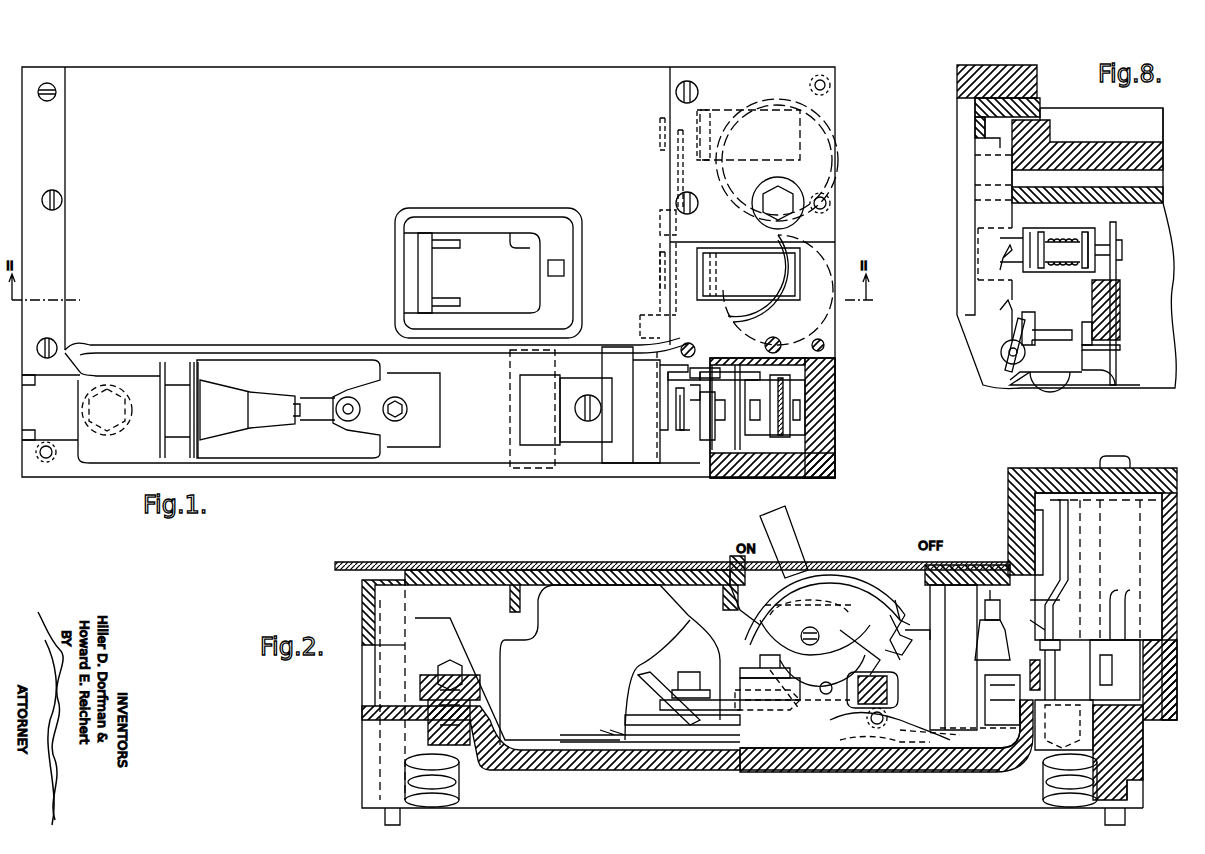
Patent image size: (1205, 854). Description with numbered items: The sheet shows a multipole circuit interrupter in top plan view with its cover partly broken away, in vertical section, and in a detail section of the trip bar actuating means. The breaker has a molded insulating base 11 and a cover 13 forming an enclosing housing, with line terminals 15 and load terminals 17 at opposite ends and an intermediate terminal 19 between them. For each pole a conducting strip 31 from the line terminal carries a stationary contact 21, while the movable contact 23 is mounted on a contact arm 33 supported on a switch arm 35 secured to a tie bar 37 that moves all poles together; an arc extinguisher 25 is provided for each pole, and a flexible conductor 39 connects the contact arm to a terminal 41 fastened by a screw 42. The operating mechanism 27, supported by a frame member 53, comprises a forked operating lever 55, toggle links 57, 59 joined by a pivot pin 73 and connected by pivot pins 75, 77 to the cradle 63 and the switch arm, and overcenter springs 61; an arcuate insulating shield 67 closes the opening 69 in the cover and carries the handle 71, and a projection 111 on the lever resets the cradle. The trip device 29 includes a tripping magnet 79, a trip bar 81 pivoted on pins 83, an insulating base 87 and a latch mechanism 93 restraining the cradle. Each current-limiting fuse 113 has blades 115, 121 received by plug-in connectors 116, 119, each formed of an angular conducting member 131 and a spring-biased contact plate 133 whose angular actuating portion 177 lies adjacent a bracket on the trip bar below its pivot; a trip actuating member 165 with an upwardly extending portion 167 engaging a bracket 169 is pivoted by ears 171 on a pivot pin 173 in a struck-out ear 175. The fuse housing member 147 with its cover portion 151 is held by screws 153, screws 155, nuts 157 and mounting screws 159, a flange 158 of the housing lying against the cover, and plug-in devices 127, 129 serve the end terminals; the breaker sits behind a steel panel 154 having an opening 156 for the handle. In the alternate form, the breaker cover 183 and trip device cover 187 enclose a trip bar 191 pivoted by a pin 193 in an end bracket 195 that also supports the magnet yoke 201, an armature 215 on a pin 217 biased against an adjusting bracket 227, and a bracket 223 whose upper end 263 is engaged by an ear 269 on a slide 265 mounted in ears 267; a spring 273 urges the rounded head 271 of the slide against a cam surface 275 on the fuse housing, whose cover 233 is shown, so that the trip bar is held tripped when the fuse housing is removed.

In FIG. 1, the base 11 is at (334, 470).
In FIG. 2, the base 11 is at (732, 770).
In FIG. 1, the cover 13 is at (430, 67).
In FIG. 2, the cover 13 is at (597, 562).
In FIG. 2, the line terminal 15 is at (425, 690).
In FIG. 2, the load terminal 17 is at (1085, 705).
In FIG. 2, the intermediate terminal 19 is at (1062, 648).
In FIG. 2, the stationary contact 21 is at (640, 718).
In FIG. 2, the movable contact 23 is at (650, 700).
In FIG. 1, the arc extinguisher 25 is at (225, 364).
In FIG. 2, the arc extinguisher 25 is at (515, 635).
In FIG. 2, the operating mechanism 27 is at (744, 667).
In FIG. 1, the trip device 29 is at (626, 459).
In FIG. 2, the trip device 29 is at (972, 662).
In FIG. 2, the conducting strip 31 is at (595, 735).
In FIG. 1, the contact arm 33 is at (310, 404).
In FIG. 2, the contact arm 33 is at (716, 688).
In FIG. 1, the switch arm 35 is at (420, 447).
In FIG. 2, the switch arm 35 is at (708, 770).
In FIG. 1, the tie bar 37 is at (515, 362).
In FIG. 2, the tie bar 37 is at (872, 716).
In FIG. 2, the flexible conductor 39 is at (860, 760).
In FIG. 2, the terminal 41 is at (958, 708).
In FIG. 1, the screw 42 is at (580, 422).
In FIG. 2, the frame member 53 is at (760, 760).
In FIG. 2, the operating lever 55 is at (815, 621).
In FIG. 2, the toggle link 57 is at (884, 626).
In FIG. 2, the toggle link 59 is at (840, 755).
In FIG. 2, the overcenter spring 61 is at (818, 572).
In FIG. 2, the cradle 63 is at (900, 622).
In FIG. 2, the insulating shield 67 is at (878, 574).
In FIG. 1, the opening 69 is at (522, 240).
In FIG. 2, the opening 69 is at (845, 575).
In FIG. 1, the handle 71 is at (427, 240).
In FIG. 2, the handle 71 is at (782, 528).
In FIG. 2, the pivot pin 73 is at (790, 690).
In FIG. 2, the pivot pin 75 is at (850, 625).
In FIG. 2, the pivot pin 77 is at (805, 760).
In FIG. 2, the overload tripping magnet 79 is at (1015, 712).
In FIG. 1, the trip bar 81 is at (652, 460).
In FIG. 2, the trip bar 81 is at (985, 620).
In FIG. 2, the pin 83 is at (983, 640).
In FIG. 1, the insulating base 87 is at (612, 366).
In FIG. 2, the insulating base 87 is at (940, 593).
In FIG. 2, the latch mechanism 93 is at (924, 621).
In FIG. 2, the projection 111 is at (740, 618).
In FIG. 1, the current-limiting fuse 113 is at (820, 262).
In FIG. 2, the current-limiting fuse 113 is at (1142, 510).
In FIG. 1, the plug-in terminal 115 is at (700, 450).
In FIG. 2, the plug-in terminal 115 is at (1060, 524).
In FIG. 2, the plug-in connector 116 is at (1050, 610).
In FIG. 2, the plug-in connector 119 is at (1120, 655).
In FIG. 1, the plug-in terminal 121 is at (770, 378).
In FIG. 2, the plug-in terminal 121 is at (1118, 615).
In FIG. 2, the plug-in device 127 is at (460, 783).
In FIG. 2, the plug-in device 129 is at (1045, 782).
In FIG. 1, the angular conducting member 131 is at (690, 415).
In FIG. 1, the contact plate 133 is at (720, 432).
In FIG. 2, the fuse housing member 147 is at (998, 532).
In FIG. 1, the cover portion 151 is at (672, 164).
In FIG. 2, the cover portion 151 is at (1070, 468).
In FIG. 1, the screw 153 is at (830, 206).
In FIG. 2, the screw 153 is at (1150, 565).
In FIG. 2, the steel panel 154 is at (652, 566).
In FIG. 2, the screw 155 is at (1008, 512).
In FIG. 2, the opening 156 is at (740, 560).
In FIG. 1, the nut 157 is at (676, 200).
In FIG. 2, the nut 157 is at (1030, 470).
In FIG. 2, the flange 158 is at (1006, 565).
In FIG. 1, the mounting screw 159 is at (772, 197).
In FIG. 2, the mounting screw 159 is at (1116, 456).
In FIG. 1, the trip actuating member 165 is at (760, 365).
In FIG. 1, the upwardly extending portion 167 is at (690, 390).
In FIG. 1, the bracket 169 is at (676, 420).
In FIG. 1, the ear 171 is at (692, 372).
In FIG. 1, the pivot pin 173 is at (680, 408).
In FIG. 1, the ear 175 is at (695, 360).
In FIG. 1, the angular actuating portion 177 is at (700, 108).
In FIG. 8, the cover 183 is at (1093, 138).
In FIG. 8, the cover 187 is at (1048, 192).
In FIG. 8, the trip bar 191 is at (1118, 294).
In FIG. 8, the pin 193 is at (1120, 314).
In FIG. 8, the end bracket 195 is at (997, 340).
In FIG. 8, the magnet yoke 201 is at (1105, 378).
In FIG. 8, the armature 215 is at (1035, 314).
In FIG. 8, the pin 217 is at (1025, 357).
In FIG. 8, the bracket 223 is at (1120, 335).
In FIG. 8, the adjusting bracket 227 is at (1035, 333).
In FIG. 8, the cover 233 is at (1037, 75).
In FIG. 8, the upper end 263 is at (1117, 228).
In FIG. 8, the slide 265 is at (1063, 262).
In FIG. 8, the ear 267 is at (1036, 232).
In FIG. 8, the ear 269 is at (1122, 250).
In FIG. 8, the rounded head 271 is at (1016, 270).
In FIG. 8, the spring 273 is at (1066, 240).
In FIG. 8, the cam surface 275 is at (997, 295).